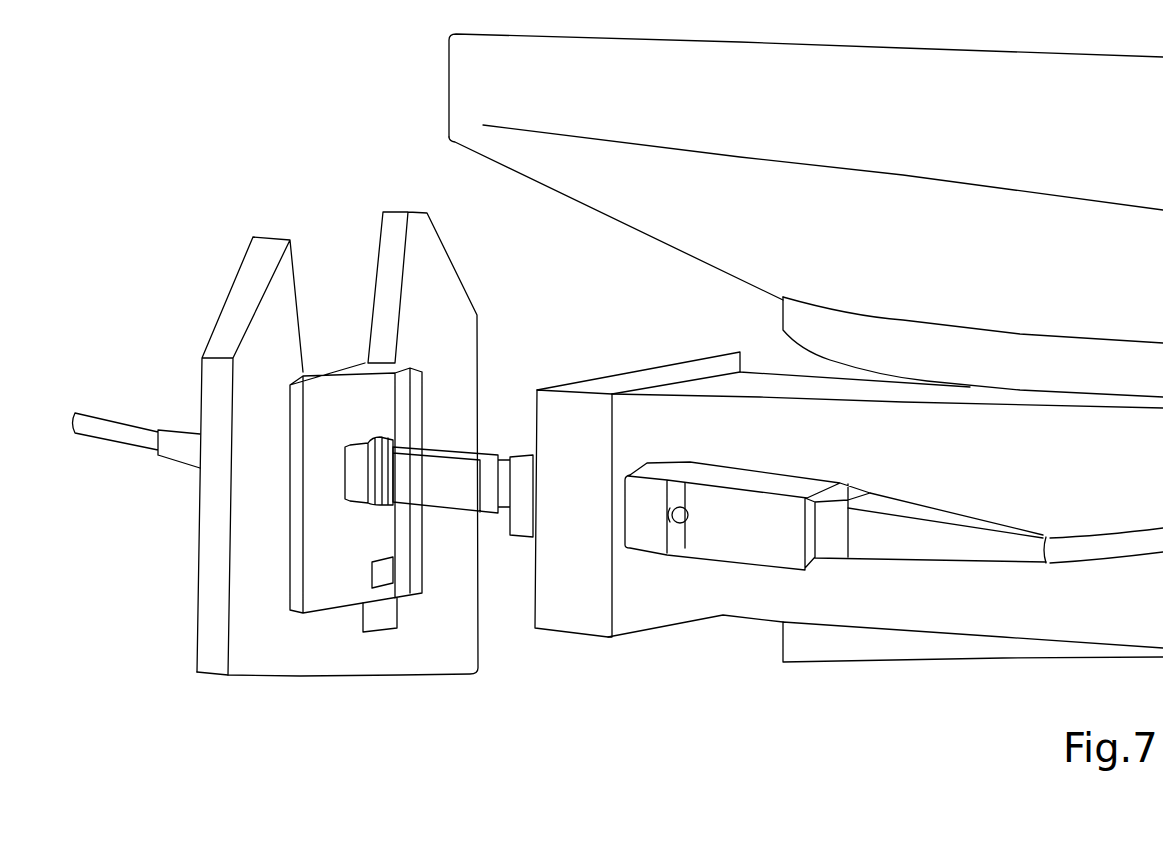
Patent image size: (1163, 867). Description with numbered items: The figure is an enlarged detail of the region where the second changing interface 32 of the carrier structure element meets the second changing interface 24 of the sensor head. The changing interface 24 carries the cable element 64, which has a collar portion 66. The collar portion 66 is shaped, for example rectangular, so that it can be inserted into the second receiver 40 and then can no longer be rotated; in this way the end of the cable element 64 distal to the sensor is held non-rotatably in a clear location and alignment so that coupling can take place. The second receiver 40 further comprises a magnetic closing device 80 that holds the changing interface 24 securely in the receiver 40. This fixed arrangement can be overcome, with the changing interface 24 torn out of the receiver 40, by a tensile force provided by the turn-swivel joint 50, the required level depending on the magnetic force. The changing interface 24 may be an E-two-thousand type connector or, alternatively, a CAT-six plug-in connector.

The second changing interface 24 is at (437, 498).
The second changing interface 32 is at (688, 566).
The second receiver 40 is at (333, 235).
The turn-swivel joint 50 is at (988, 642).
The cable element 64 is at (125, 440).
The collar portion 66 is at (350, 528).
The magnetic closing device 80 is at (375, 628).